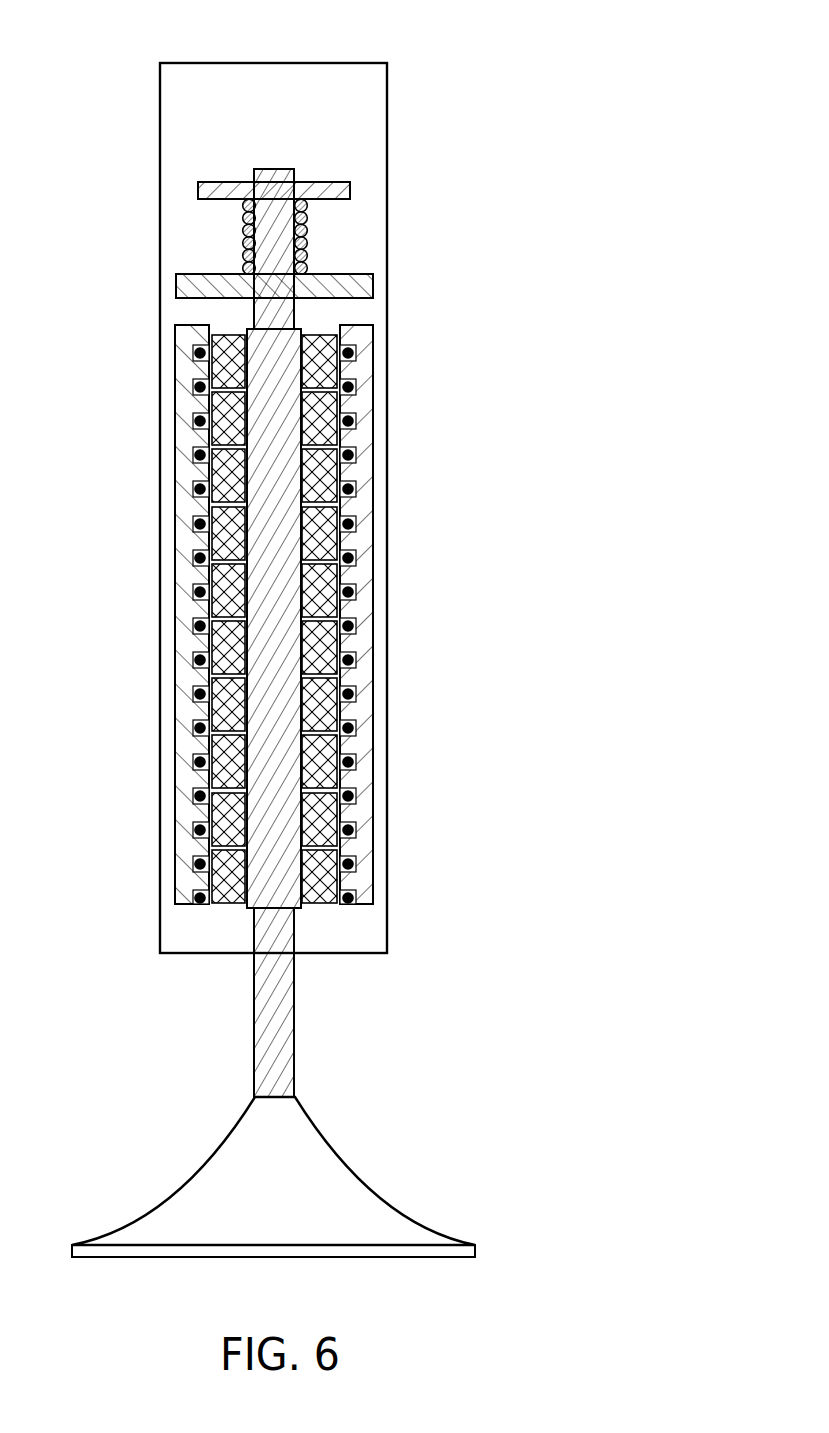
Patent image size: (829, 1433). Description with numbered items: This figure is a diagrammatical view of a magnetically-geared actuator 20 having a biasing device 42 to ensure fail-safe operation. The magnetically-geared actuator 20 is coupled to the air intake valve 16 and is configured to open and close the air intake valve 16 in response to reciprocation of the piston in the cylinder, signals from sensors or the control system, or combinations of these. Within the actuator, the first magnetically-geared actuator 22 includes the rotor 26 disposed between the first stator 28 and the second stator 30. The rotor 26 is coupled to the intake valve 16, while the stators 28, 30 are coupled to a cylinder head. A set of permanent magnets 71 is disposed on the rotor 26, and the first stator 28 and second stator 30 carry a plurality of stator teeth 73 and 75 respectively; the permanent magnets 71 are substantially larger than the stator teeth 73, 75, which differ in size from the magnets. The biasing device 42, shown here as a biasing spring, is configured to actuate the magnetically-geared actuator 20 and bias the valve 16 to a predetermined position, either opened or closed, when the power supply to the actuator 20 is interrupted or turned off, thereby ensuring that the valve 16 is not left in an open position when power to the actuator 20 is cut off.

The air intake valve 16 is at (198, 1178).
The magnetically-geared actuator 20 is at (432, 42).
The first magnetically-geared actuator 22 is at (278, 611).
The rotor 26 is at (303, 330).
The first stator 28 is at (182, 529).
The second stator 30 is at (362, 430).
The biasing device 42 is at (308, 217).
The permanent magnets 71 is at (318, 585).
The stator teeth 73 is at (202, 712).
The stator teeth 75 is at (343, 712).